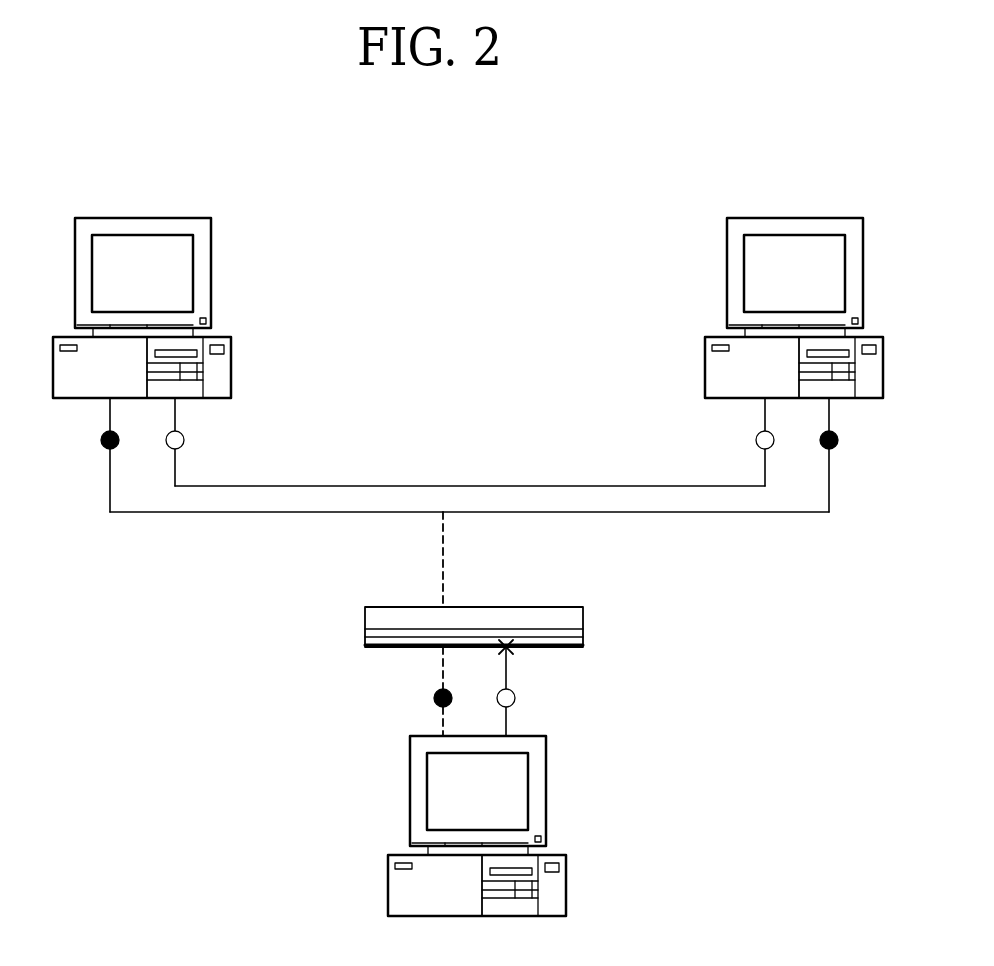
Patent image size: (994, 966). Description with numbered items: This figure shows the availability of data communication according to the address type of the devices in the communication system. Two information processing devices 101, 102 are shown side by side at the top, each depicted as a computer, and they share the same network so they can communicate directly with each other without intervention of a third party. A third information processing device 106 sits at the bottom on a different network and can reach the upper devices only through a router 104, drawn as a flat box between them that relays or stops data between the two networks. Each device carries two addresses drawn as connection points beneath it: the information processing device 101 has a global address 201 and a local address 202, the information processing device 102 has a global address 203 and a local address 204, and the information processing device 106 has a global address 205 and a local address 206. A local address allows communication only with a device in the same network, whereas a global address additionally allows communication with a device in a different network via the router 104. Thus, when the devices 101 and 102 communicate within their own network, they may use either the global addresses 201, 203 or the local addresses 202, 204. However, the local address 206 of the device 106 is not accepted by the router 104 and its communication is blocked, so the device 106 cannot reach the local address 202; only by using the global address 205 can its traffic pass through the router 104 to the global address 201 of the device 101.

The information processing device 101 is at (864, 272).
The information processing device 102 is at (212, 272).
The router 104 is at (583, 612).
The information processing device 106 is at (546, 792).
The global address 201 is at (831, 424).
The local address 202 is at (763, 422).
The global address 203 is at (108, 422).
The local address 204 is at (177, 424).
The global address 205 is at (440, 722).
The local address 206 is at (508, 677).